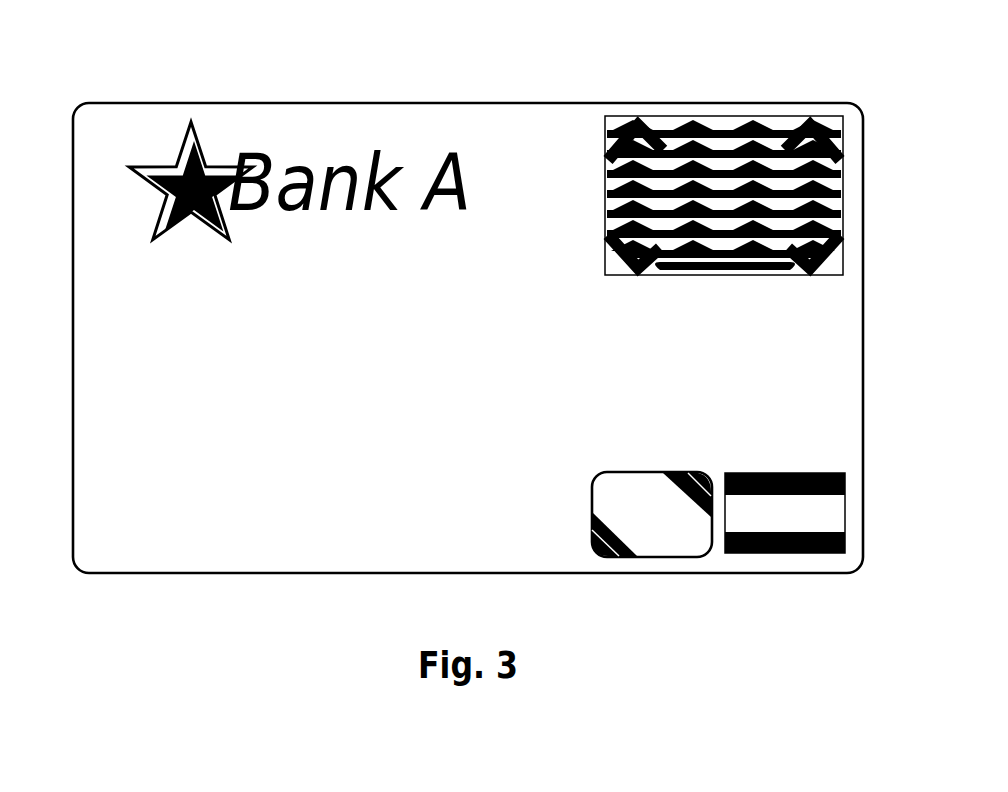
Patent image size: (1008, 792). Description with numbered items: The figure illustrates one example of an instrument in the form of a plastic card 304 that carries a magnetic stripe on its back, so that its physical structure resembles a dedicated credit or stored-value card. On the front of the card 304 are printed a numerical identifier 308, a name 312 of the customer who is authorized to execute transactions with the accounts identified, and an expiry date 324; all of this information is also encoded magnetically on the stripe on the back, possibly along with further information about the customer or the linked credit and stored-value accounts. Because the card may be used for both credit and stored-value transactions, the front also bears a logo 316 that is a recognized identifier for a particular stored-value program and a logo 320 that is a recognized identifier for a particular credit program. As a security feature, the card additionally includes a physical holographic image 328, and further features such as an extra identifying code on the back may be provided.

The plastic card 304 is at (348, 102).
The numerical identifier 308 is at (192, 313).
The name 312 is at (177, 417).
The logo 316 is at (613, 557).
The logo 320 is at (807, 553).
The expiry date 324 is at (813, 317).
The physical holographic image 328 is at (845, 170).